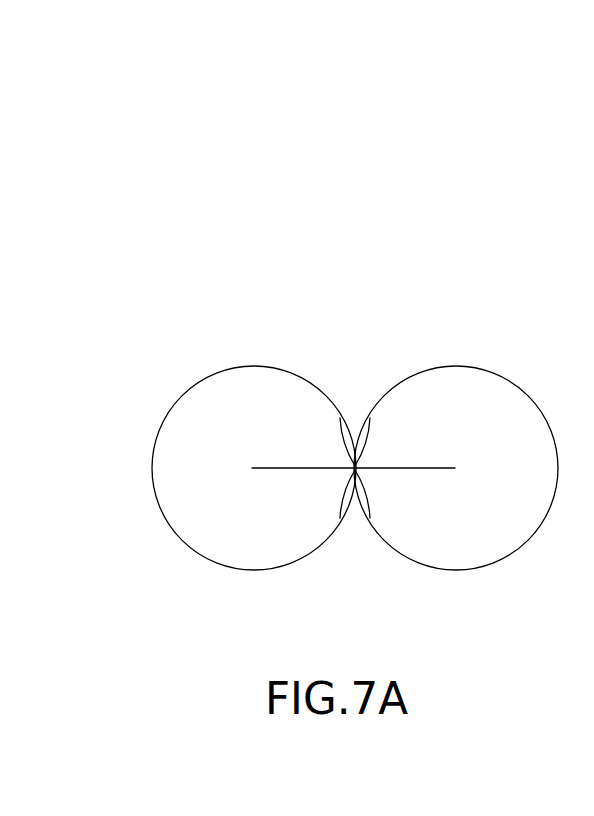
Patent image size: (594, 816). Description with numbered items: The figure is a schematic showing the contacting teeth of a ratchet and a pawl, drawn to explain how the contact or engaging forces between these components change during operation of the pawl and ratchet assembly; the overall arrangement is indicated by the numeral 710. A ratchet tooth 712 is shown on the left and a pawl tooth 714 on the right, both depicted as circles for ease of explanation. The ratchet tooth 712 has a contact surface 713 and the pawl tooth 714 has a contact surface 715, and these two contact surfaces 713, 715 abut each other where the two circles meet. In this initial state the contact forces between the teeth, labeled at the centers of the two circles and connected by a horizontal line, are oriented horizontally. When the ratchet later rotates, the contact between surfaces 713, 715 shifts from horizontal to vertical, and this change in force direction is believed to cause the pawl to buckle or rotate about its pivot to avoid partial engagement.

The two-circle configuration 710 is at (340, 439).
The ratchet tooth 712 is at (155, 572).
The pawl tooth 714 is at (557, 566).
The contact surface 713 is at (342, 520).
The contact surface 715 is at (365, 413).